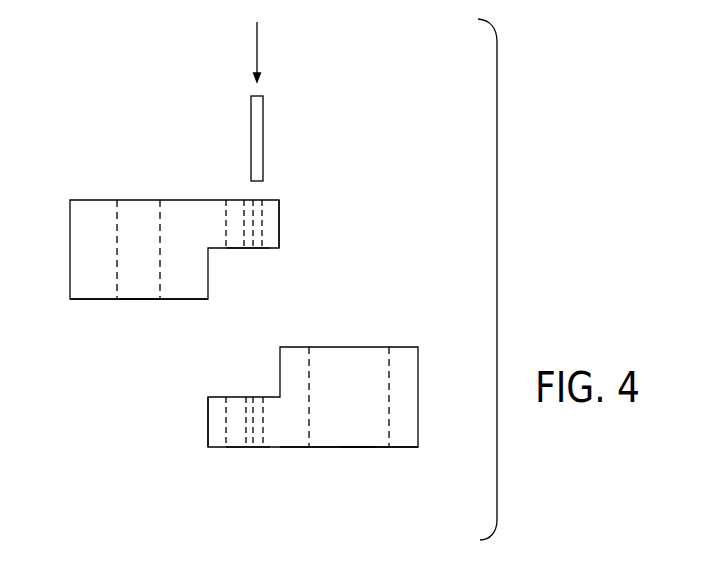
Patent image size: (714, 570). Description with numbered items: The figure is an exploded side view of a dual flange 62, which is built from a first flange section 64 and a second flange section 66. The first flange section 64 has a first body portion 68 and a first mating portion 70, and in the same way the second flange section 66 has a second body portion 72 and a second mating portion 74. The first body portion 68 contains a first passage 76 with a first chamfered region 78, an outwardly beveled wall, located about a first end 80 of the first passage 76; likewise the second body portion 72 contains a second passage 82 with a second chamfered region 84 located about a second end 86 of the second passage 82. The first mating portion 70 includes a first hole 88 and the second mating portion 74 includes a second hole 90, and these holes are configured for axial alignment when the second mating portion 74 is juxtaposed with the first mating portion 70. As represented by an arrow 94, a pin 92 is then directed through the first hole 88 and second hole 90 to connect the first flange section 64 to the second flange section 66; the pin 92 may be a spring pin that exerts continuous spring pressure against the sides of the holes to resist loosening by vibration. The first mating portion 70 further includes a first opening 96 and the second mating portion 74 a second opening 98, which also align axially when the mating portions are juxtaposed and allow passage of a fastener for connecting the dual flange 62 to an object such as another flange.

The dual flange 62 is at (53, 445).
The first flange section 64 is at (70, 231).
The second flange section 66 is at (418, 388).
The first body portion 68 is at (80, 284).
The first mating portion 70 is at (279, 228).
The second body portion 72 is at (418, 432).
The second mating portion 74 is at (208, 432).
The first passage 76 is at (134, 312).
The first chamfered region 78 is at (117, 200).
The first end 80 is at (160, 200).
The second passage 82 is at (359, 460).
The second chamfered region 84 is at (309, 348).
The second end 86 is at (389, 348).
The first hole 88 is at (261, 262).
The second hole 90 is at (263, 459).
The pin 92 is at (263, 146).
The arrow 94 is at (257, 48).
The first opening 96 is at (234, 264).
The second opening 98 is at (232, 459).